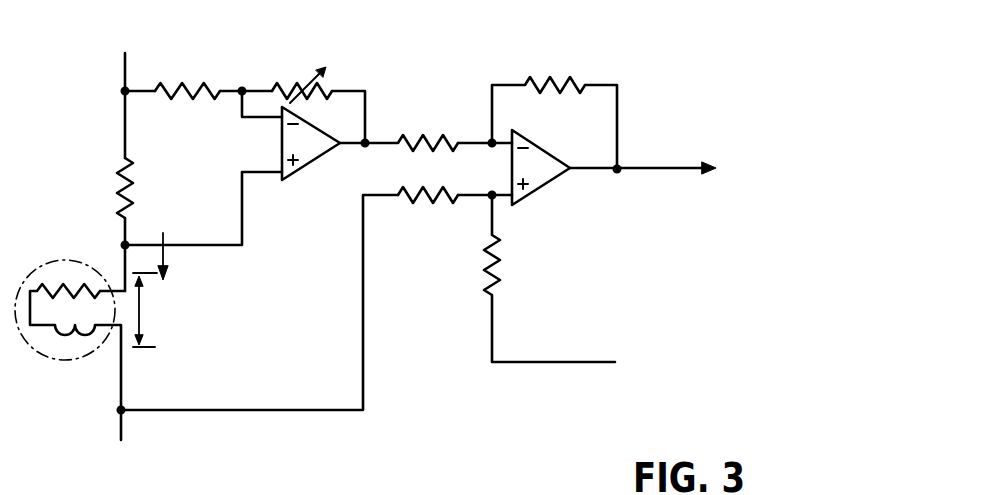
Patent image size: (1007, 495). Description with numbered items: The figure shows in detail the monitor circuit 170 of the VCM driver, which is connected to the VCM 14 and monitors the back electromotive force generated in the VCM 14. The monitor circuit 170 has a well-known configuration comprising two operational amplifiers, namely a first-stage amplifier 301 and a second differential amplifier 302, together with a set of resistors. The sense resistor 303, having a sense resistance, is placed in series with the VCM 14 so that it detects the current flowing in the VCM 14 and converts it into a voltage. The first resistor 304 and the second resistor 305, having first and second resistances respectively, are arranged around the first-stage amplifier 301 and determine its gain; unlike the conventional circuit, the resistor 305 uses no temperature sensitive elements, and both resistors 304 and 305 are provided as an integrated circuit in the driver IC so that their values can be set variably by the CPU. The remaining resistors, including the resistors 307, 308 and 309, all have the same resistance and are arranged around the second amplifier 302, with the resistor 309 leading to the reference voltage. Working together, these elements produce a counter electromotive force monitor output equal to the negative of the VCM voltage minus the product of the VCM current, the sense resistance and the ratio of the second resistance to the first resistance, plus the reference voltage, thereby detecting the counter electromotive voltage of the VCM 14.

The VCM 14 is at (70, 362).
The monitor circuit 170 is at (442, 253).
The operational amplifier 301 is at (305, 172).
The operational amplifier 302 is at (555, 185).
The sense resistor 303 is at (135, 190).
The first resistor 304 is at (193, 104).
The second resistor 305 is at (313, 97).
The resistor 307 is at (425, 210).
The resistor 308 is at (420, 152).
The resistor 309 is at (480, 271).